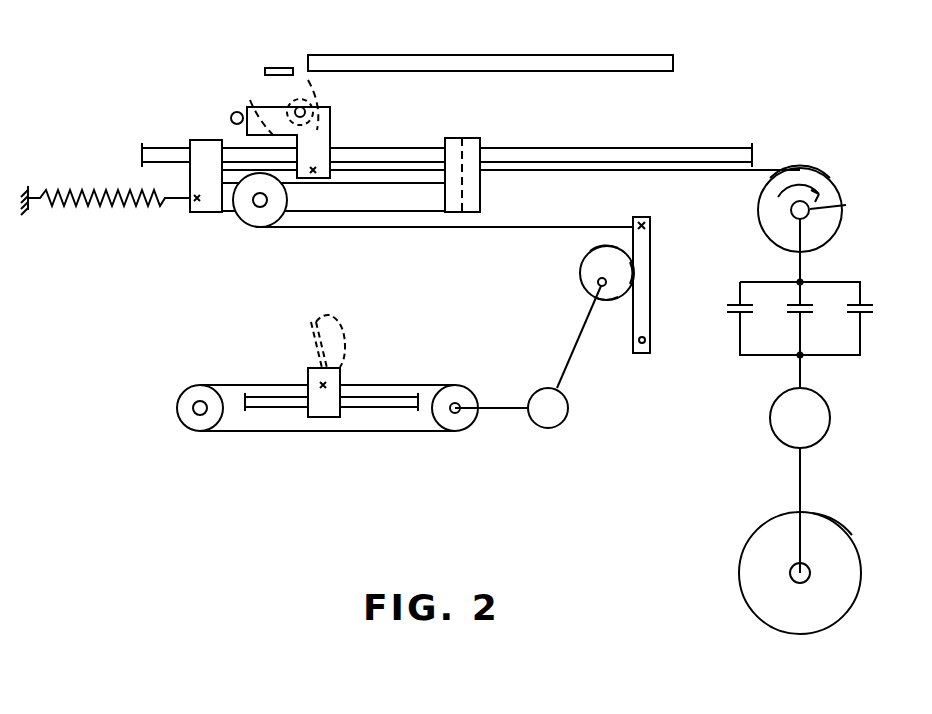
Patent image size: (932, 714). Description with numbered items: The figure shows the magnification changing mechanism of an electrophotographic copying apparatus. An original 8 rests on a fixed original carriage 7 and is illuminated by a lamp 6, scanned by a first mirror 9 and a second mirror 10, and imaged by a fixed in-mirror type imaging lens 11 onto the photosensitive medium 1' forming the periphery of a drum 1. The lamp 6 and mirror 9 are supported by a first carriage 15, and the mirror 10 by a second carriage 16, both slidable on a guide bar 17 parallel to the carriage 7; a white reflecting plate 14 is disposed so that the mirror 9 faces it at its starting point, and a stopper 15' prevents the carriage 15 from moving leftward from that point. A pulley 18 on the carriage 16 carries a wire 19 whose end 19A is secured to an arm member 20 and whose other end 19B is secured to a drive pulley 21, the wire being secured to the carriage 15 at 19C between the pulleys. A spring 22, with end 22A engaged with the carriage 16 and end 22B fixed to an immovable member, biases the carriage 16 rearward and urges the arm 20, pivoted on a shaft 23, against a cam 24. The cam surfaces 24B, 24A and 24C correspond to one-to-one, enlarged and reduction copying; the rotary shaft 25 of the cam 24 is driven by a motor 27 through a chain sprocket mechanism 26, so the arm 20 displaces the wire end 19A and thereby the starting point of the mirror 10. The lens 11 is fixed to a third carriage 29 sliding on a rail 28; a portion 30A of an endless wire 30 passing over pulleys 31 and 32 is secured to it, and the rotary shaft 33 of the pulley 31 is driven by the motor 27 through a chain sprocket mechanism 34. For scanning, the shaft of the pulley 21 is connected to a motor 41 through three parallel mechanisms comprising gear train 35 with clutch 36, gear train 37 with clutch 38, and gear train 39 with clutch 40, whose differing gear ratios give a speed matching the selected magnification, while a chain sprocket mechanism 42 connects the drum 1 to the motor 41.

The drum 1 is at (812, 573).
The photosensitive medium 1' is at (845, 525).
The illuminating lamp 6 is at (294, 100).
The original carriage 7 is at (608, 55).
The original 8 is at (483, 55).
The first mirror 9 is at (258, 105).
The second mirror 10 is at (464, 148).
The in-mirror type imaging lens 11 is at (342, 326).
The white reflecting plate 14 is at (282, 67).
The first carriage 15 is at (310, 135).
The stopper 15' is at (217, 115).
The second carriage 16 is at (378, 212).
The guide bar 17 is at (630, 147).
The pulley 18 is at (257, 226).
The wire 19 is at (497, 229).
The wire end 19A is at (650, 222).
The other wire end 19B is at (800, 168).
The belt fastening point 19C is at (315, 168).
The arm member 20 is at (650, 318).
The drive pulley 21 is at (830, 232).
The spring 22 is at (115, 190).
The spring end 22A is at (197, 203).
The spring anchor 22B is at (25, 210).
The shaft 23 is at (648, 340).
The cam 24 is at (580, 270).
The cam surface 24A is at (605, 300).
The cam surface 24B is at (635, 270).
The cam surface 24C is at (601, 249).
The rotary shaft 25 is at (598, 283).
The chain sprocket mechanism 26 is at (570, 373).
The motor 27 is at (558, 426).
The rail 28 is at (390, 409).
The third carriage 29 is at (322, 418).
The endless wire 30 is at (378, 385).
The wire portion 30A is at (320, 382).
The pulley 31 is at (457, 432).
The pulley 32 is at (183, 426).
The rotary shaft 33 is at (456, 404).
The chain sprocket mechanism 34 is at (505, 410).
The gear train 35 is at (740, 348).
The clutch 36 is at (727, 306).
The gear train 37 is at (803, 336).
The clutch 38 is at (790, 314).
The gear train 39 is at (862, 336).
The clutch 40 is at (874, 310).
The motor 41 is at (829, 420).
The chain sprocket mechanism 42 is at (803, 480).